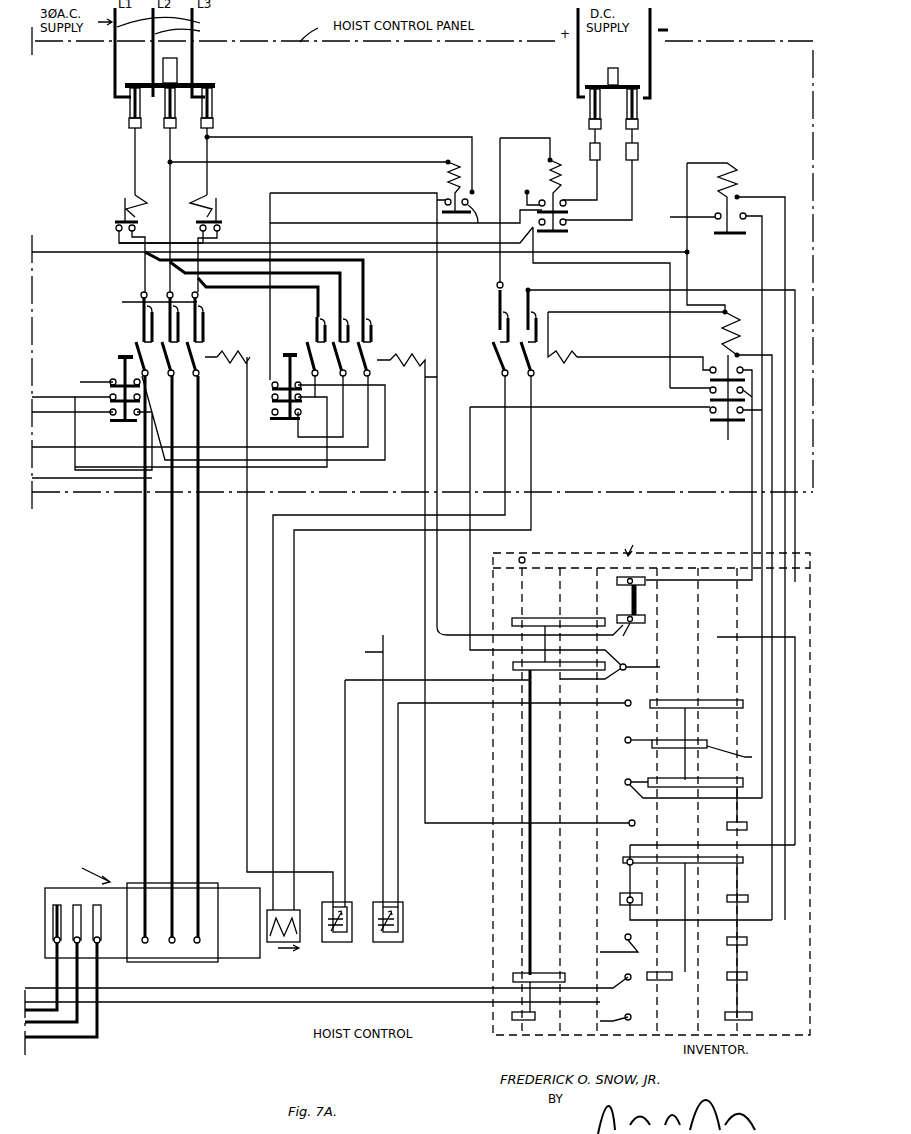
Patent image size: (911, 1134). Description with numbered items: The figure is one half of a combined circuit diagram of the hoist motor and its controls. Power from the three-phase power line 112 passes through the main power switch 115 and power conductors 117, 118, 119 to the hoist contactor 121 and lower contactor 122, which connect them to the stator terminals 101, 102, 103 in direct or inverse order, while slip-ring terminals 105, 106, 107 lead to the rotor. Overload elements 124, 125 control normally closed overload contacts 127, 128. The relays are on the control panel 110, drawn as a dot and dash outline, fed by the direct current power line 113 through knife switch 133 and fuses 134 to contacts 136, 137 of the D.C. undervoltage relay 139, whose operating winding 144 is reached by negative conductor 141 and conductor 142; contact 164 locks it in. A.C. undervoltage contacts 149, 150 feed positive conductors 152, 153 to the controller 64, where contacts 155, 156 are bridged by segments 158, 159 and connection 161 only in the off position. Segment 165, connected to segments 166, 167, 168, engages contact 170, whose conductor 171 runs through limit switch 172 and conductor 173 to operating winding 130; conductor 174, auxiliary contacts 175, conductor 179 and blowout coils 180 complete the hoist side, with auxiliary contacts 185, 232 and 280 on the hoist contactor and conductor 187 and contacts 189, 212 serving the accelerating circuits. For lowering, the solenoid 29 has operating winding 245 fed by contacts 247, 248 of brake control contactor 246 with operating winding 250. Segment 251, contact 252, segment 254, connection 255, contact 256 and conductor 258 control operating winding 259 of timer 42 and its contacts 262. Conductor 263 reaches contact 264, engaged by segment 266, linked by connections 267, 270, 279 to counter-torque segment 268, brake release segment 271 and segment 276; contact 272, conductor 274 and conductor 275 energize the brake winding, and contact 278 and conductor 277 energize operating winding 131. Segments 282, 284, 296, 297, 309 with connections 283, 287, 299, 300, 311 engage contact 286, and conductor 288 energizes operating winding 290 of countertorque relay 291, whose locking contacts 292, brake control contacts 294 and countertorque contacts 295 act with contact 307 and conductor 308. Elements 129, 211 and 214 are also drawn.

The solenoid 29 is at (295, 912).
The timer 42 is at (734, 153).
The controller 64 is at (484, 849).
The stator terminal 101 is at (162, 958).
The stator terminal 102 is at (174, 944).
The stator terminal 103 is at (198, 944).
The slip-ring terminal 105 is at (55, 943).
The slip-ring terminal 106 is at (78, 943).
The slip-ring terminal 107 is at (108, 931).
The control panel 110 is at (812, 90).
The three-phase power line 112 is at (173, 25).
The direct current power line 113 is at (650, 47).
The main power switch 115 is at (203, 82).
The power conductor 117 is at (134, 146).
The power conductor 118 is at (168, 154).
The power conductor 119 is at (209, 151).
The hoist contactor 121 is at (131, 335).
The lower contactor 122 is at (306, 336).
The overload element 124 is at (123, 214).
The overload element 125 is at (212, 212).
The overload contact 127 is at (116, 230).
The overload contact 128 is at (220, 231).
The conductor 129 is at (689, 266).
The operating winding 130 is at (230, 352).
The operating winding 131 is at (410, 356).
The knife switch 133 is at (636, 85).
The fuses 134 is at (592, 148).
The stationary contact 136 is at (565, 201).
The stationary contact 137 is at (550, 233).
The D.C. undervoltage relay 139 is at (537, 153).
The negative conductor 141 is at (640, 182).
The conductor 142 is at (365, 222).
The operating winding 144 is at (548, 168).
The stationary contact 149 is at (447, 200).
The stationary contact 150 is at (458, 216).
The positive conductor 152 is at (627, 277).
The positive conductor 153 is at (340, 196).
The stationary contact 155 is at (622, 578).
The stationary contact 156 is at (627, 636).
The movable drum segment 158 is at (618, 590).
The movable drum segment 159 is at (646, 621).
The connection 161 is at (640, 604).
The stationary contact 164 is at (527, 192).
The movable segment 165 is at (560, 618).
The segment 166 is at (512, 666).
The segment 167 is at (540, 975).
The segment 168 is at (528, 1020).
The stationary contact 170 is at (655, 665).
The conductor 171 is at (652, 410).
The limit switch 172 is at (348, 943).
The conductor 173 is at (248, 504).
The conductor 174 is at (68, 492).
The auxiliary contacts 175 is at (304, 386).
The negative conductor 179 is at (88, 254).
The blowout coils 180 is at (526, 292).
The auxiliary contacts 185 is at (116, 380).
The conductor 187 is at (167, 990).
The stationary contact 189 is at (328, 969).
The conductor 211 is at (220, 1003).
The stationary contact 212 is at (328, 1013).
The conductor 214 is at (752, 437).
The auxiliary contacts 232 is at (114, 423).
The operating winding 245 is at (267, 930).
The brake control contactor 246 is at (560, 366).
The contact 247 is at (494, 342).
The contact 248 is at (520, 356).
The operating winding 250 is at (552, 354).
The segment 251 is at (700, 870).
The stationary contact 252 is at (625, 860).
The segment 254 is at (620, 899).
The connection 255 is at (625, 872).
The stationary contact 256 is at (628, 907).
The conductor 258 is at (742, 196).
The operating winding 259 is at (732, 166).
The contacts 262 is at (716, 216).
The conductor 263 is at (470, 705).
The stationary contact 264 is at (632, 694).
The segment 266 is at (712, 700).
The connection 267 is at (688, 723).
The counter-torque segment 268 is at (652, 741).
The connection 270 is at (660, 778).
The brake release segment 271 is at (620, 812).
The stationary contact 272 is at (625, 783).
The conductor 274 is at (762, 245).
The conductor 275 is at (670, 227).
The segment 276 is at (727, 830).
The conductor 277 is at (438, 377).
The stationary contact 278 is at (630, 826).
The connection 279 is at (362, 478).
The contacts 280 is at (82, 382).
The segment 282 is at (730, 903).
The connection 283 is at (727, 898).
The segment 284 is at (749, 941).
The stationary contact 286 is at (625, 938).
The connection 287 is at (727, 937).
The conductor 288 is at (740, 355).
The operating winding 290 is at (720, 334).
The countertorque relay 291 is at (738, 308).
The locking contacts 292 is at (703, 366).
The brake control contacts 294 is at (708, 390).
The countertorque contacts 295 is at (710, 414).
The segment 296 is at (750, 1016).
The segment 297 is at (725, 1026).
The connection 299 is at (728, 970).
The connection 300 is at (726, 986).
The stationary contact 307 is at (625, 741).
The conductor 308 is at (752, 477).
The segment 309 is at (668, 980).
The connection 311 is at (685, 940).